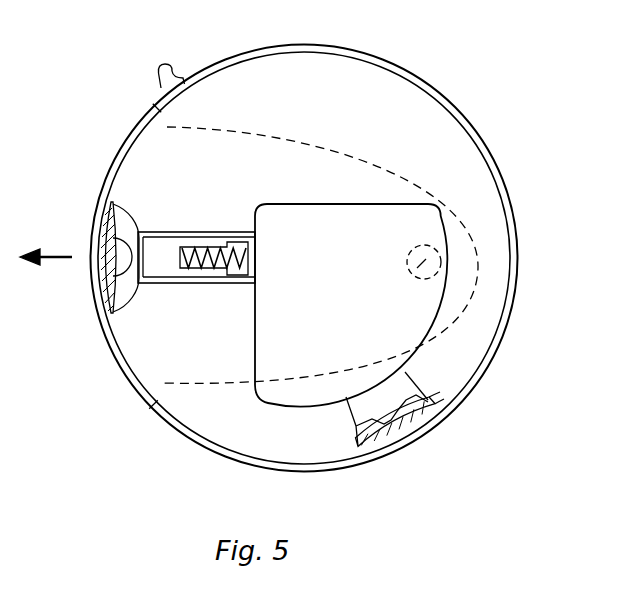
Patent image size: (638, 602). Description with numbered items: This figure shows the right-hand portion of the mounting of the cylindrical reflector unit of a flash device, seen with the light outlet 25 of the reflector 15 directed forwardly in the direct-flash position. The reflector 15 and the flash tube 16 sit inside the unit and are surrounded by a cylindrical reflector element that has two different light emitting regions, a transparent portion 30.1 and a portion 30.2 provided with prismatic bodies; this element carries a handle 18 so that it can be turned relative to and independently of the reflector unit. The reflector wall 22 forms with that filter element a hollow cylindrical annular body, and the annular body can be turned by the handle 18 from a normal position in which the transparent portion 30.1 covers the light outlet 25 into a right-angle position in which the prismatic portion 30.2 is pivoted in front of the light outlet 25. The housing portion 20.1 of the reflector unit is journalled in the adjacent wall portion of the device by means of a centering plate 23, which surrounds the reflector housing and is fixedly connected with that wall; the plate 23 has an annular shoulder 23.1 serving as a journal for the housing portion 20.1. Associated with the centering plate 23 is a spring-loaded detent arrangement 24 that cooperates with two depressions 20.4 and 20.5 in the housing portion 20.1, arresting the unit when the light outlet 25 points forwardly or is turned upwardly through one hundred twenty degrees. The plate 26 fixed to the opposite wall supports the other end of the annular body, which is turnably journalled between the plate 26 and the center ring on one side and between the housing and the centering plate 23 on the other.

The reflector 15 is at (285, 140).
The flash tube 16 is at (417, 268).
The handle 18 is at (171, 73).
The housing portion 20.1 is at (124, 222).
The depression 20.4 is at (118, 258).
The depression 20.5 is at (407, 427).
The reflector wall 22 is at (443, 96).
The centering plate 23 is at (465, 160).
The annular shoulder 23.1 is at (427, 410).
The spring-loaded detent arrangement 24 is at (163, 265).
The light outlet 25 is at (46, 249).
The plate 26 is at (285, 226).
The transparent portion 30.1 is at (126, 141).
The prismatic portion 30.2 is at (178, 428).